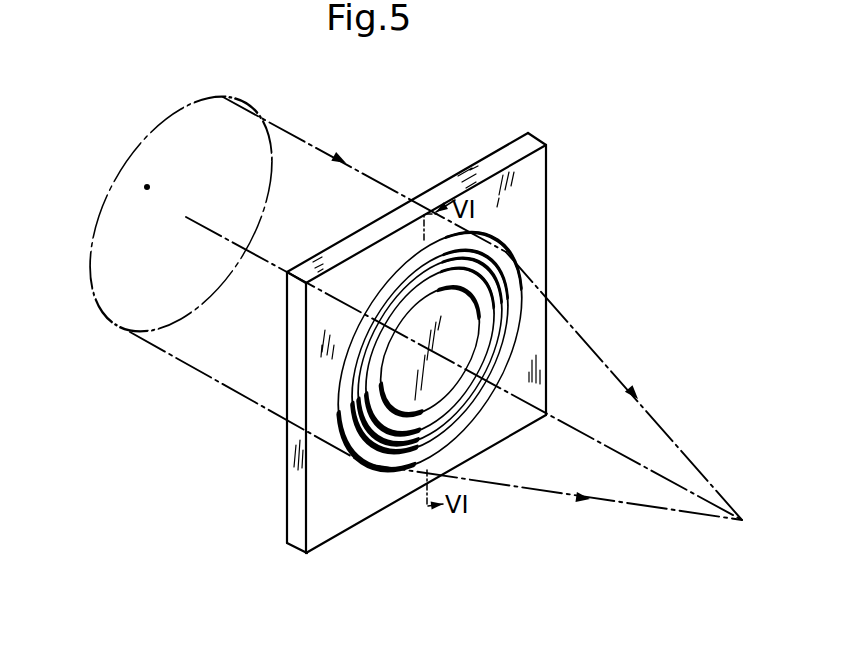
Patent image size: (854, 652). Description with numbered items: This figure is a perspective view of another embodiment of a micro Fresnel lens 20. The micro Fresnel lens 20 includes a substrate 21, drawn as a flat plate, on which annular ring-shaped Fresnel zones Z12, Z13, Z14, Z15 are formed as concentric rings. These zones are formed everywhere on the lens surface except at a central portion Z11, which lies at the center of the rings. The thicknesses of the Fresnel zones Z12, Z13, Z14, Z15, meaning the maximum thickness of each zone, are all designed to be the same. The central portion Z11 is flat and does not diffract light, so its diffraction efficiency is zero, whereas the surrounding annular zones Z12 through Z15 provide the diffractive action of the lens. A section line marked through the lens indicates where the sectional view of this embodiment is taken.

The micro Fresnel lens 20 is at (494, 137).
The substrate 21 is at (537, 167).
The central portion Z11 is at (467, 344).
The Fresnel zone Z12 is at (497, 303).
The Fresnel zone Z13 is at (518, 277).
The Fresnel zone Z14 is at (493, 257).
The Fresnel zone Z15 is at (493, 233).